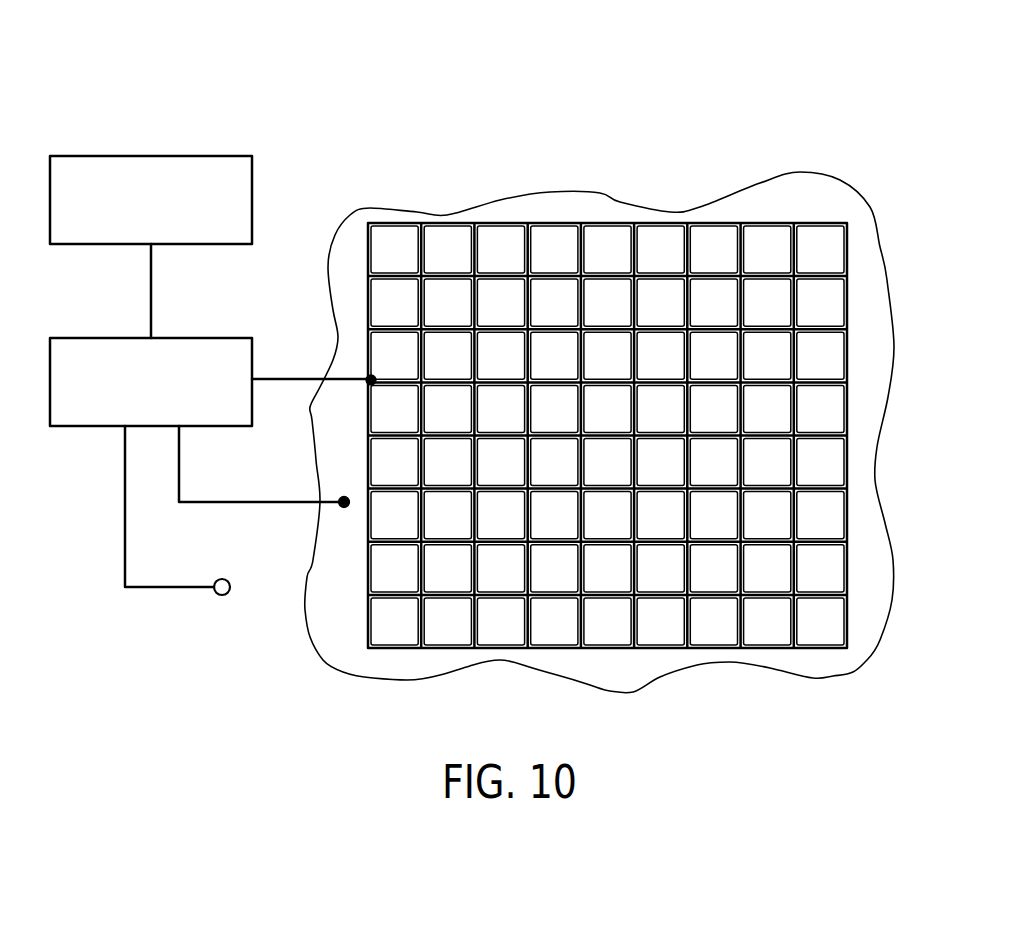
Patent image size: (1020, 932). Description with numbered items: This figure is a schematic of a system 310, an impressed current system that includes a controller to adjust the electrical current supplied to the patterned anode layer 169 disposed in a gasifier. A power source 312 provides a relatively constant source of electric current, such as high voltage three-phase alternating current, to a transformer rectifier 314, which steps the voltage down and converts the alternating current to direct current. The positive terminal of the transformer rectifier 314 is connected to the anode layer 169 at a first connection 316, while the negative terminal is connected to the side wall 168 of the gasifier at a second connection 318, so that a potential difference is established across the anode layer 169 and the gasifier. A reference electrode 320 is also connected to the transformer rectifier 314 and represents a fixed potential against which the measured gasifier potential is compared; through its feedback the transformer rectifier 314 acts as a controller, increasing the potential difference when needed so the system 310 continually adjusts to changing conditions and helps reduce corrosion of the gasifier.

The system 310 is at (660, 75).
The power source 312 is at (118, 154).
The transformer rectifier 314 is at (111, 336).
The first connection 316 is at (369, 377).
The second connection 318 is at (344, 506).
The reference electrode 320 is at (223, 597).
The side wall 168 is at (832, 663).
The anode layer 169 is at (655, 650).